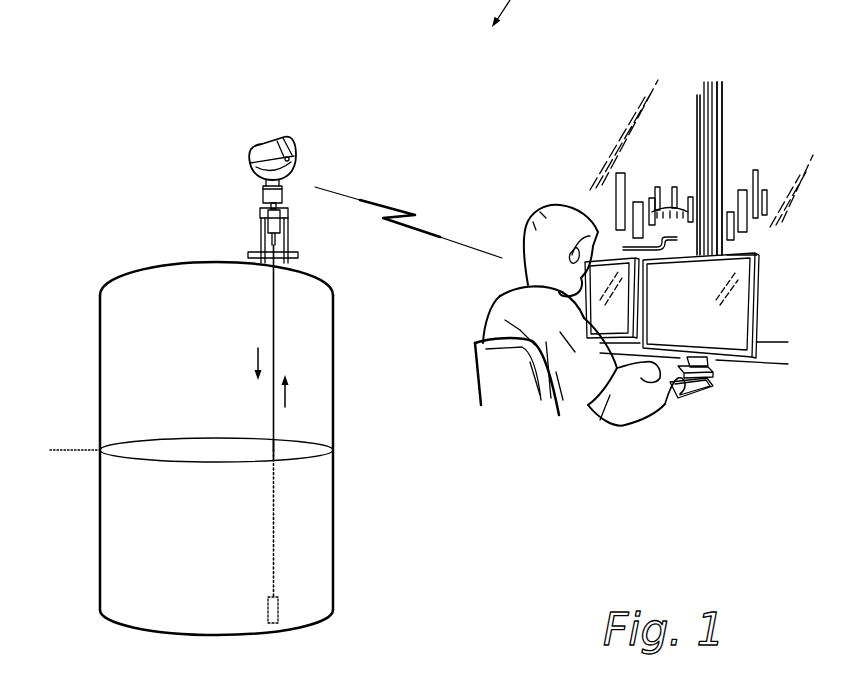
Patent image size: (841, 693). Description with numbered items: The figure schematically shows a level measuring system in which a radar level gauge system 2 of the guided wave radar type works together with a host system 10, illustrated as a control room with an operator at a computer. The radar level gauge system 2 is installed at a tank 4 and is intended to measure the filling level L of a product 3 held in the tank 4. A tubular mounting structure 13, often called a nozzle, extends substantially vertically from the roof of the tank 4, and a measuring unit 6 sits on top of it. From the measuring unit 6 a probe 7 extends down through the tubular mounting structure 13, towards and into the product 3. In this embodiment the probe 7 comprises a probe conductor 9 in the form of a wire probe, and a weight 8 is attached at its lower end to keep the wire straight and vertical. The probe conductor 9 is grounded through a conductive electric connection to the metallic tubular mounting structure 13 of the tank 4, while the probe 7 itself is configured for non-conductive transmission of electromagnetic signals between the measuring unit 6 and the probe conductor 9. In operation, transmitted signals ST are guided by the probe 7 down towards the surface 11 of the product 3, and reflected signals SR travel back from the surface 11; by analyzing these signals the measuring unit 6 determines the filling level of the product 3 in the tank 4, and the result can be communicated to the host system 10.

The radar level gauge system 2 is at (267, 169).
The product 3 is at (193, 555).
The tank 4 is at (99, 393).
The measuring unit 6 is at (265, 140).
The probe 7 is at (265, 461).
The weight 8 is at (276, 608).
The probe conductor 9 is at (276, 424).
The host system 10 is at (752, 136).
The surface 11 is at (182, 450).
The tubular mounting structure 13 is at (302, 262).
The filling level L is at (65, 449).
The transmitted signals ST is at (242, 374).
The reflected signals SR is at (301, 401).